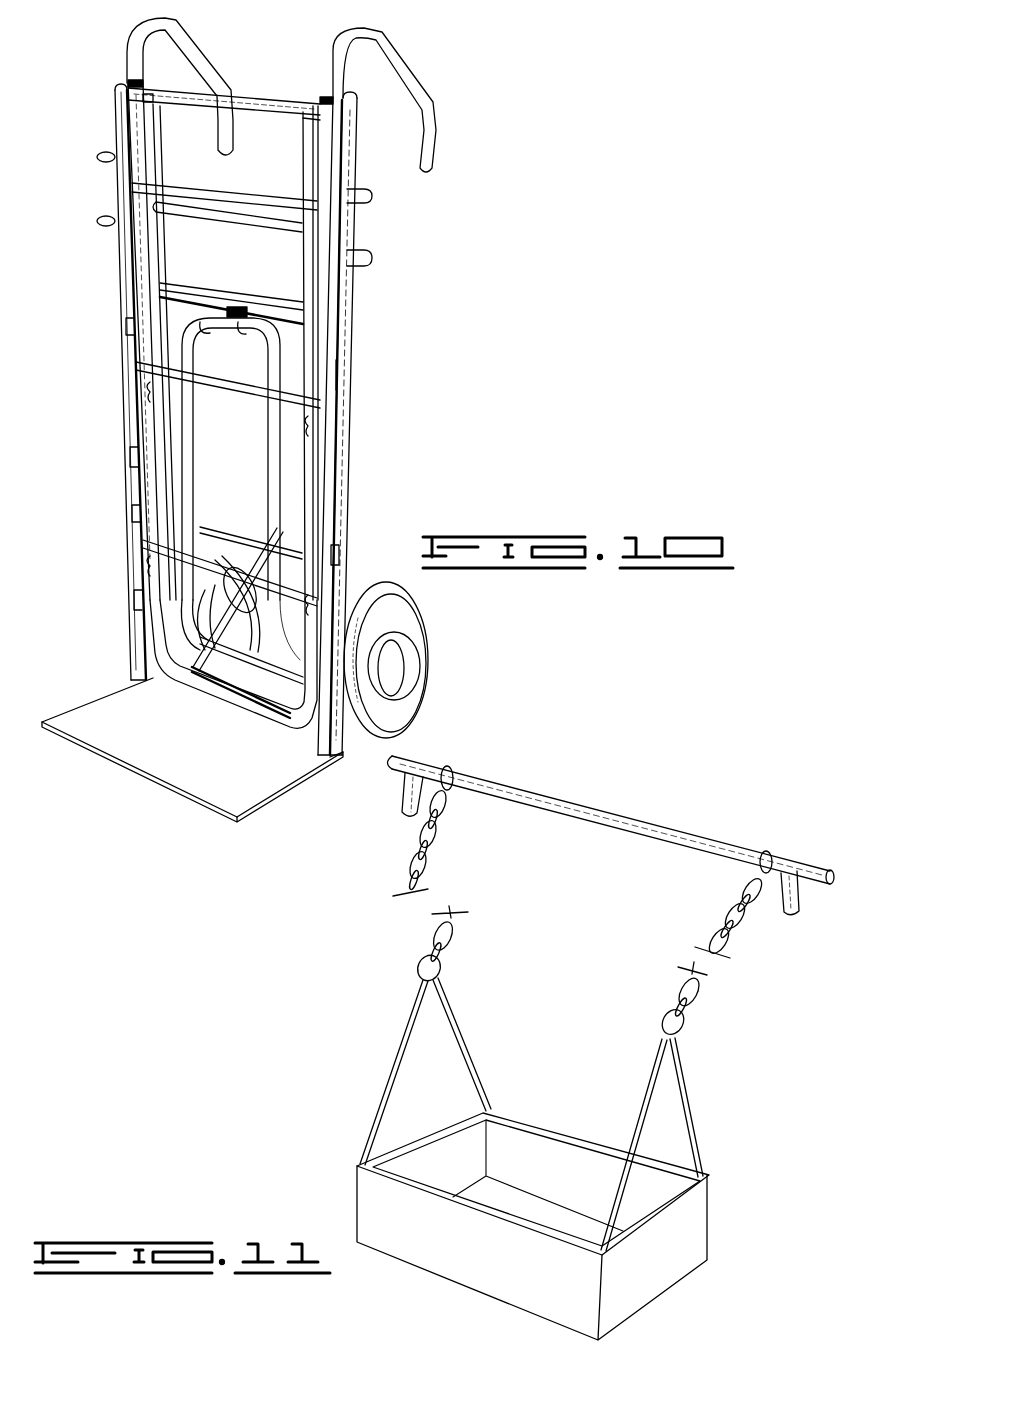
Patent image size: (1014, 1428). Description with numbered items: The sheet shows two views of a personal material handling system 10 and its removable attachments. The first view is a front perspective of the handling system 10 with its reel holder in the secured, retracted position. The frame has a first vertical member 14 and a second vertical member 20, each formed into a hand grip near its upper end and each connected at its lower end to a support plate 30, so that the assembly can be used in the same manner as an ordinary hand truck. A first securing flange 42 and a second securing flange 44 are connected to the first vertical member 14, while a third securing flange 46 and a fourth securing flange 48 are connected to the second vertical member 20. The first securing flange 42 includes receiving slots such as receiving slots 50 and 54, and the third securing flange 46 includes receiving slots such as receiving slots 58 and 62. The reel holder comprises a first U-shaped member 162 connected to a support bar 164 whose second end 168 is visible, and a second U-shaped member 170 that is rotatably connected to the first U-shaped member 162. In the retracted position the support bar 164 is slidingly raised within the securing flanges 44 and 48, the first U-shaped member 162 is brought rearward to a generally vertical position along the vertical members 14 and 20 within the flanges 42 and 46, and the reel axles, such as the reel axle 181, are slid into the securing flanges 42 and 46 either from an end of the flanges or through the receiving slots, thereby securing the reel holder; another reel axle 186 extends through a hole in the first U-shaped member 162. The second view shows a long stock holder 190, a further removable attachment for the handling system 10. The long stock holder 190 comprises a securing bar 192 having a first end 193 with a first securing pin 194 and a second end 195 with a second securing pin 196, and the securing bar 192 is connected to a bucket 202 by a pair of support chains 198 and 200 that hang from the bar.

In FIG. 10, the handling system 10 is at (418, 35).
In FIG. 10, the first vertical member 14 is at (128, 84).
In FIG. 10, the second vertical member 20 is at (332, 86).
In FIG. 10, the support plate 30 is at (206, 797).
In FIG. 10, the first securing flange 42 is at (114, 124).
In FIG. 10, the second securing flange 44 is at (150, 55).
In FIG. 10, the third securing flange 46 is at (350, 92).
In FIG. 10, the fourth securing flange 48 is at (333, 136).
In FIG. 10, the receiving slot 50 is at (125, 323).
In FIG. 10, the receiving slot 54 is at (130, 512).
In FIG. 10, the receiving slot 58 is at (340, 374).
In FIG. 10, the receiving slot 62 is at (352, 562).
In FIG. 10, the first U-shaped member 162 is at (300, 170).
In FIG. 10, the support bar 164 is at (290, 94).
In FIG. 10, the second end 168 is at (140, 98).
In FIG. 10, the second U-shaped member 170 is at (308, 735).
In FIG. 10, the reel axle 181 is at (245, 392).
In FIG. 10, the reel axle 186 is at (250, 226).
In FIG. 11, the long stock holder 190 is at (630, 765).
In FIG. 11, the securing bar 192 is at (640, 822).
In FIG. 11, the first end 193 is at (398, 750).
In FIG. 11, the first securing pin 194 is at (402, 797).
In FIG. 11, the second end 195 is at (836, 865).
In FIG. 11, the second securing pin 196 is at (800, 912).
In FIG. 11, the support chain 198 is at (418, 860).
In FIG. 11, the support chain 200 is at (726, 922).
In FIG. 11, the bucket 202 is at (580, 1136).